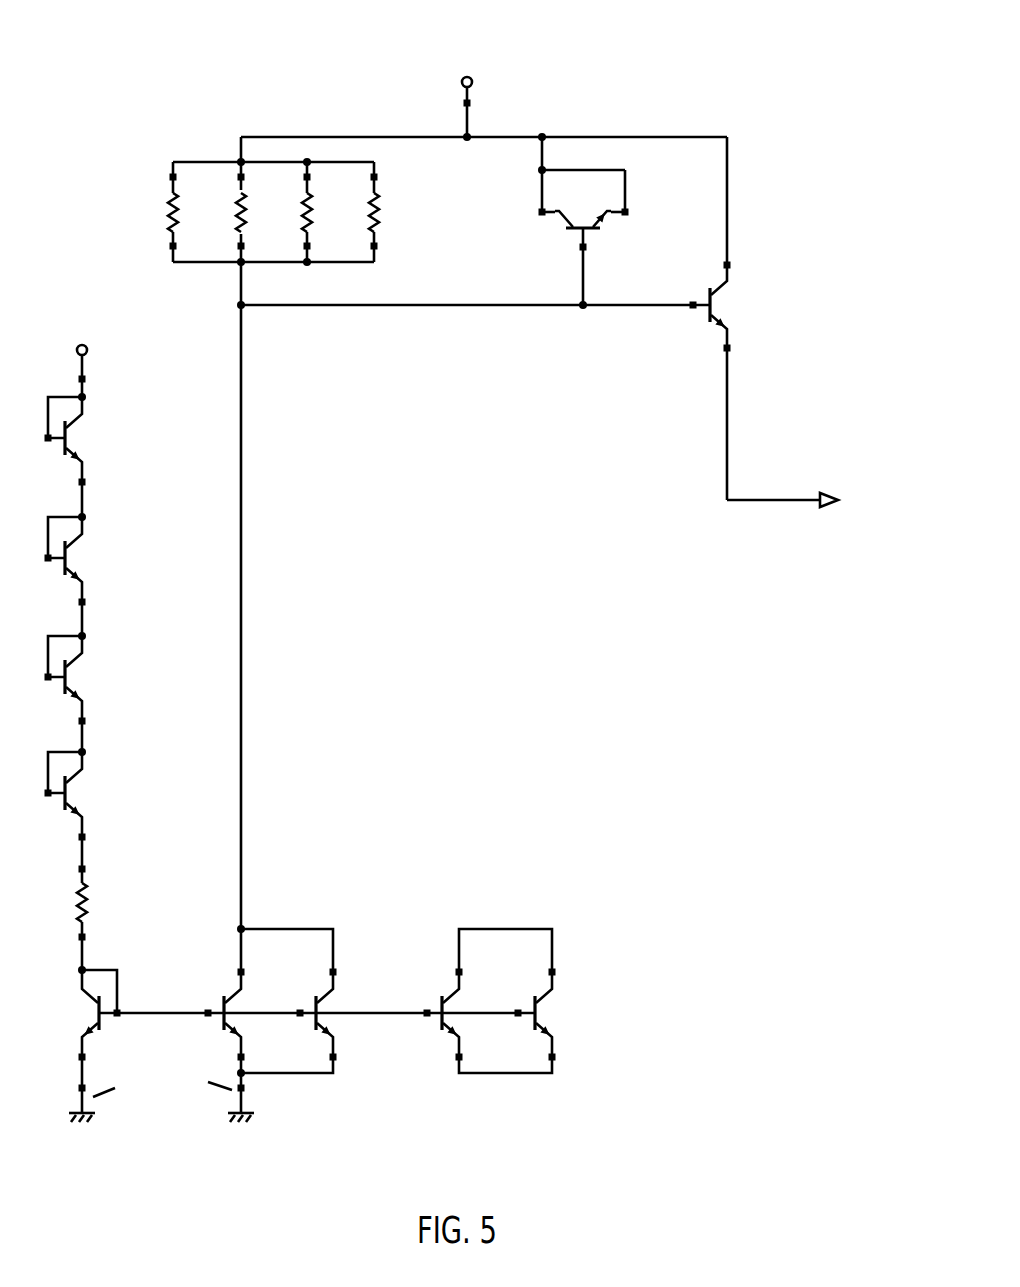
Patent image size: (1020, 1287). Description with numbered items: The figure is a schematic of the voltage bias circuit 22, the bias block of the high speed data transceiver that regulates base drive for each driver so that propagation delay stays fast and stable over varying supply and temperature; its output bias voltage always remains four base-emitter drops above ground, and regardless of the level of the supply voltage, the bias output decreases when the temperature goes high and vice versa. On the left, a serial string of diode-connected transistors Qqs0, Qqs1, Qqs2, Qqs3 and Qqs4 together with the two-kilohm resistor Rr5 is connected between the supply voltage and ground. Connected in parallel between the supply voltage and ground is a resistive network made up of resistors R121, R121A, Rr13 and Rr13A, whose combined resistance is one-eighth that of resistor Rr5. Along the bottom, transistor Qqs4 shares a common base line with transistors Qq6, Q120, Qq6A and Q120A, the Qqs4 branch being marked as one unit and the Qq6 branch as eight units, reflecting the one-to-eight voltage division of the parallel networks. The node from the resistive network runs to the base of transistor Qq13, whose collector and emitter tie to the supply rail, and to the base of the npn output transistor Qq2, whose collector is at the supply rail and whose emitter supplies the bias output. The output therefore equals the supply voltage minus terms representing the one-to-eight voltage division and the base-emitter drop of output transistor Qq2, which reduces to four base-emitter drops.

The voltage bias circuit 22 is at (794, 42).
The resistor R121A is at (200, 212).
The resistor R121 is at (264, 212).
The resistor Rr13 is at (328, 212).
The resistor Rr13A is at (401, 212).
The transistor Qq13 is at (583, 223).
The npn output transistor Qq2 is at (733, 318).
The diode-connected transistor Qqs0 is at (85, 461).
The diode-connected transistor Qqs1 is at (85, 581).
The diode-connected transistor Qqs2 is at (85, 698).
The diode-connected transistor Qqs3 is at (85, 815).
The 2K resistor Rr5 is at (102, 926).
The diode-connected transistor Qqs4 is at (81, 1044).
The transistor Qq6 is at (252, 1023).
The transistor Q120 is at (310, 1001).
The transistor Qq6A is at (475, 1001).
The transistor Q120A is at (551, 1001).